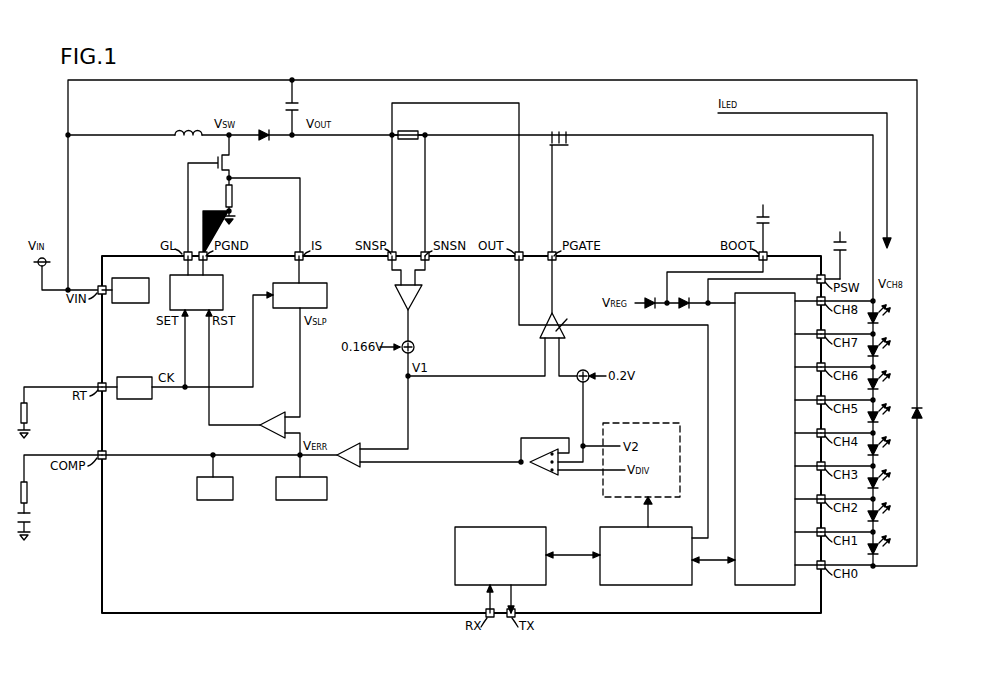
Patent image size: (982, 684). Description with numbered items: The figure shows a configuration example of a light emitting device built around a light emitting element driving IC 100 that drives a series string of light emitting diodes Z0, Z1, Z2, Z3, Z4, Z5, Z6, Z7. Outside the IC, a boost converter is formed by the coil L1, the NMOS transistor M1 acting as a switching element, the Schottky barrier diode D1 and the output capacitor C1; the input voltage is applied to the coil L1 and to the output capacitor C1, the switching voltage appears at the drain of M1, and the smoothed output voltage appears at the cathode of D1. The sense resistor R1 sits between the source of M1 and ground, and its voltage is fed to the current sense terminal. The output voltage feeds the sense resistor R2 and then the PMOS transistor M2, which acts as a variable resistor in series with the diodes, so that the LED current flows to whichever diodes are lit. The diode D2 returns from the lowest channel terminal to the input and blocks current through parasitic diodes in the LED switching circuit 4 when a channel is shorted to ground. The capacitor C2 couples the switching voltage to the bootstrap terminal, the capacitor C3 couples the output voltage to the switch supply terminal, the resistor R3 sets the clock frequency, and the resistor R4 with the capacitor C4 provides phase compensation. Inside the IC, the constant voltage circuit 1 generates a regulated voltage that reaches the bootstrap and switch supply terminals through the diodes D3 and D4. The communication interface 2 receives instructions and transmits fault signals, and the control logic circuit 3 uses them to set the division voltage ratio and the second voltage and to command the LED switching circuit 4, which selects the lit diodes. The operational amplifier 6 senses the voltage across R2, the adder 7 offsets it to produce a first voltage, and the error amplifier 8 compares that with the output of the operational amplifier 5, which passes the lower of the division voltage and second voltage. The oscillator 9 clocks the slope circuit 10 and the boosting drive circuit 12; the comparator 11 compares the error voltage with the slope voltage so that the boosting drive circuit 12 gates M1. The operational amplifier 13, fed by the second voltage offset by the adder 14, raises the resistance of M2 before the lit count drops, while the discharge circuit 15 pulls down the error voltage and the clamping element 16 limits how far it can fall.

The constant voltage circuit 1 is at (133, 278).
The communication interface 2 is at (503, 526).
The control logic circuit 3 is at (681, 526).
The LED switching circuit 4 is at (734, 319).
The operational amplifier 5 is at (543, 476).
The operational amplifier 6 is at (420, 301).
The adder 7 is at (414, 349).
The error amplifier 8 is at (352, 446).
The oscillator 9 is at (135, 377).
The slope circuit 10 is at (328, 298).
The comparator 11 is at (279, 414).
The boosting drive circuit 12 is at (224, 298).
The operational amplifier 13 is at (556, 316).
The adder 14 is at (582, 370).
The discharge circuit 15 is at (328, 491).
The clamping element 16 is at (234, 491).
The light emitting element driving IC 100 is at (665, 256).
The coil L1 is at (189, 126).
The Schottky barrier diode D1 is at (264, 126).
The output capacitor C1 is at (298, 107).
The NMOS transistor M1 is at (232, 159).
The sense resistor R1 is at (232, 200).
The sense resistor R2 is at (407, 130).
The PMOS transistor M2 is at (556, 130).
The capacitor C2 is at (769, 222).
The capacitor C3 is at (846, 248).
The diode D2 is at (923, 412).
The diode D3 is at (650, 297).
The diode D4 is at (684, 297).
The resistor R3 is at (27, 417).
The resistor R4 is at (27, 496).
The capacitor C4 is at (27, 526).
The light emitting diode Z0 is at (879, 549).
The light emitting diode Z1 is at (879, 516).
The light emitting diode Z2 is at (879, 483).
The light emitting diode Z3 is at (879, 450).
The light emitting diode Z4 is at (879, 417).
The light emitting diode Z5 is at (879, 384).
The light emitting diode Z6 is at (879, 351).
The light emitting diode Z7 is at (879, 318).